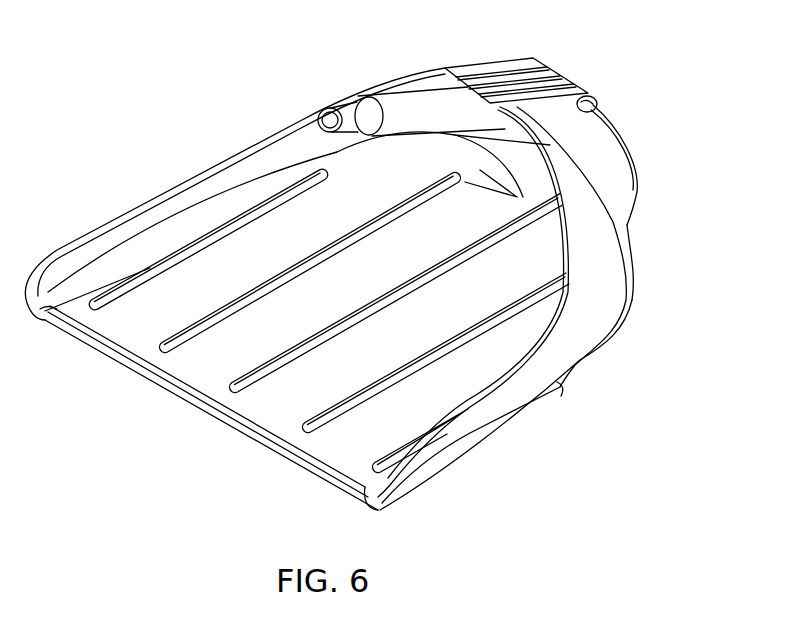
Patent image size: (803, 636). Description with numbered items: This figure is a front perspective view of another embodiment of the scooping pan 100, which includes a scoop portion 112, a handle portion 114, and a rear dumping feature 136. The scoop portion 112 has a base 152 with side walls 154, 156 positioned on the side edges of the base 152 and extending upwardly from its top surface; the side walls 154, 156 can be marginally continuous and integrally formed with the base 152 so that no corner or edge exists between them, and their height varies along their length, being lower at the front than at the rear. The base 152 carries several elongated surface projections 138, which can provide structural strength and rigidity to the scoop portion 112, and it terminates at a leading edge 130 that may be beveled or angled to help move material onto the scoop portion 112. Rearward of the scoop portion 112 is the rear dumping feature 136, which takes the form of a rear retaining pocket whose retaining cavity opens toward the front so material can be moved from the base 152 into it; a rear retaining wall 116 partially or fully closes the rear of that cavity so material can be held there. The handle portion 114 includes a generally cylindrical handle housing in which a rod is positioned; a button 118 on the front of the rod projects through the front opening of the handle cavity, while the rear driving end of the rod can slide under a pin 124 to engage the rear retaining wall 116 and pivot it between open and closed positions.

The scooping pan 100 is at (128, 57).
The scoop portion 112 is at (100, 222).
The handle portion 114 is at (405, 90).
The rear retaining wall 116 is at (630, 142).
The button 118 is at (330, 110).
The pin 124 is at (596, 104).
The leading edge 130 is at (107, 362).
The rear dumping feature 136 is at (628, 228).
The surface projections 138 is at (310, 434).
The base 152 is at (258, 403).
The side wall 154 is at (580, 358).
The side wall 156 is at (230, 172).